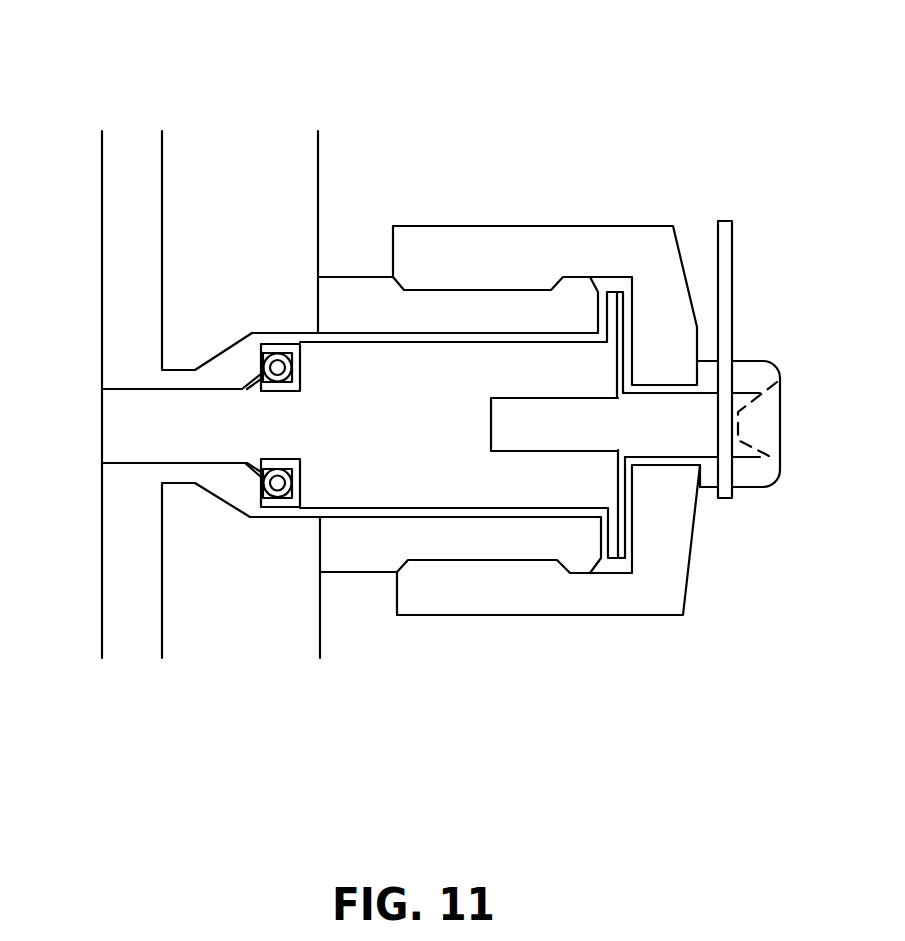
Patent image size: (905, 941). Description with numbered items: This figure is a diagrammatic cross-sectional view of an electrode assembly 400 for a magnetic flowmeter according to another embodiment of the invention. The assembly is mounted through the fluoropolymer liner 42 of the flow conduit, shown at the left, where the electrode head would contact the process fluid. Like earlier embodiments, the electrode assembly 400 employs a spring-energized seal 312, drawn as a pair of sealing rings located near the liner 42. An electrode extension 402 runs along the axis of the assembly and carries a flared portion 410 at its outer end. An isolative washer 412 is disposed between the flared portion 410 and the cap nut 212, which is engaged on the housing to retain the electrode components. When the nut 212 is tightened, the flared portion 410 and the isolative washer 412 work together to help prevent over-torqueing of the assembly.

The fluoropolymer liner 42 is at (135, 600).
The cap nut 212 is at (547, 592).
The spring-energized seal 312 is at (298, 372).
The electrode assembly 400 is at (603, 150).
The sleeve 402 is at (411, 393).
The flared portion 410 is at (608, 545).
The isolative washer 412 is at (623, 497).